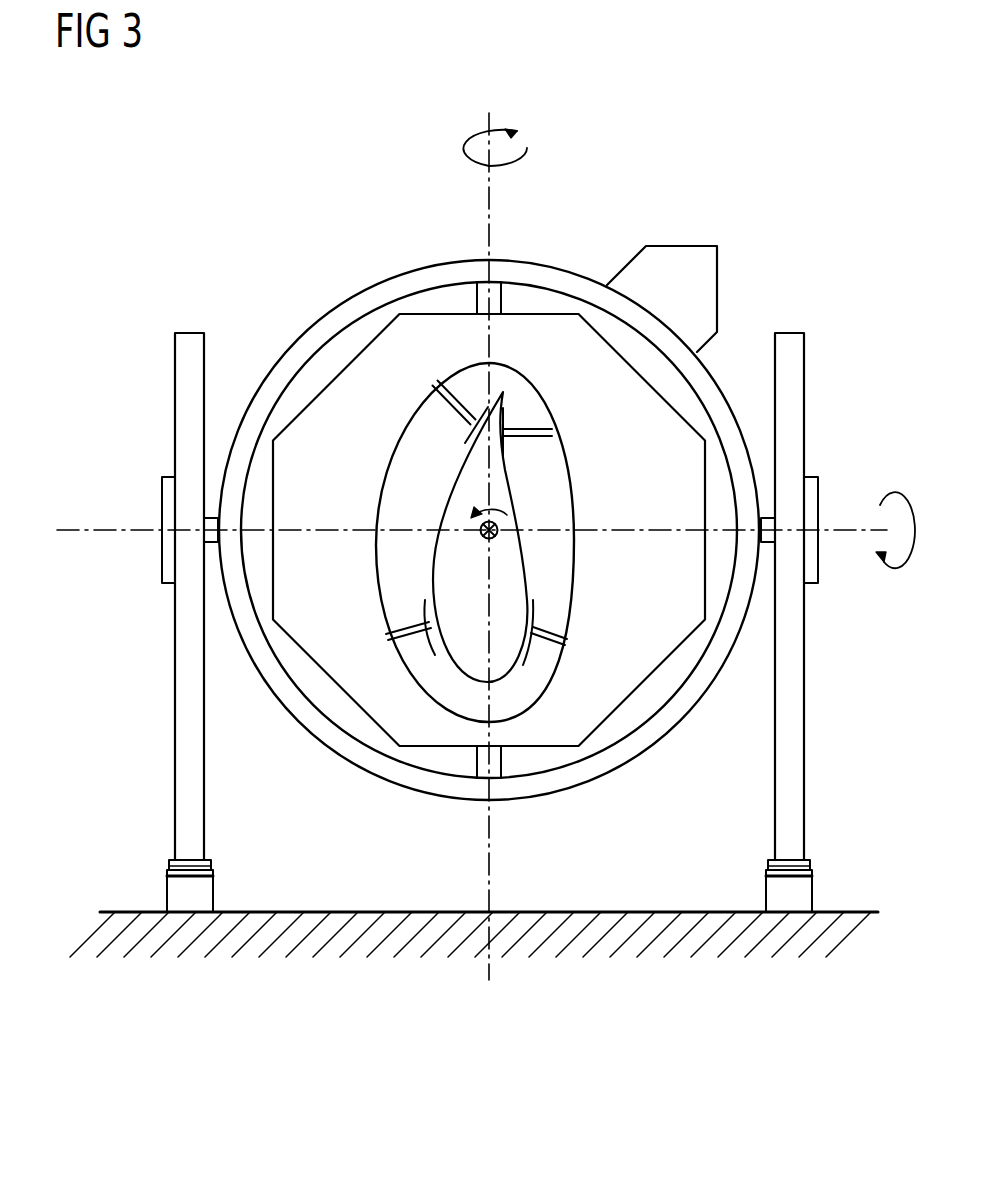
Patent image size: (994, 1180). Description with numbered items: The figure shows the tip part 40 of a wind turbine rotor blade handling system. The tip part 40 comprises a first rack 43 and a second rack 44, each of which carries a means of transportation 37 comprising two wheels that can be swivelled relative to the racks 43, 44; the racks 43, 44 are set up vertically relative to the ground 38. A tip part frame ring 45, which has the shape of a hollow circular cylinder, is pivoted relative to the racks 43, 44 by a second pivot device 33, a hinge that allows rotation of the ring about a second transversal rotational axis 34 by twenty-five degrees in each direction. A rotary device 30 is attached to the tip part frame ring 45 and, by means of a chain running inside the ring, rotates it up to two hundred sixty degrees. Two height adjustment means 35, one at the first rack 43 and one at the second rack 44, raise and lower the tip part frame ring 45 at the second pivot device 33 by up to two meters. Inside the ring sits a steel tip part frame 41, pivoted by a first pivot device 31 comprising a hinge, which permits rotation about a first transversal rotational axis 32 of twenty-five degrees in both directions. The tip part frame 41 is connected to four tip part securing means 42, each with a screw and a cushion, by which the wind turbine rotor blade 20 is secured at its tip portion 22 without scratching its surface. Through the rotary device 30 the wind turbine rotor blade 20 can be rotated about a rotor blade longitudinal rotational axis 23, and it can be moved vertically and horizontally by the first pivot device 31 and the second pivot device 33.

The wind turbine rotor blade 20 is at (521, 542).
The tip portion 22 is at (488, 550).
The rotor blade longitudinal rotational axis 23 is at (497, 523).
The rotary device 30 is at (705, 273).
The first pivot device 31 is at (498, 298).
The first transversal rotational axis 32 is at (489, 188).
The second pivot device 33 is at (212, 533).
The second transversal rotational axis 34 is at (65, 527).
The height adjustment means 35 is at (162, 483).
The means of transportation 37 is at (200, 893).
The ground 38 is at (316, 915).
The tip part 40 is at (147, 367).
The tip part frame 41 is at (418, 333).
The tip part securing means 42 is at (432, 392).
The first rack 43 is at (191, 786).
The second rack 44 is at (790, 787).
The tip part frame ring 45 is at (703, 384).